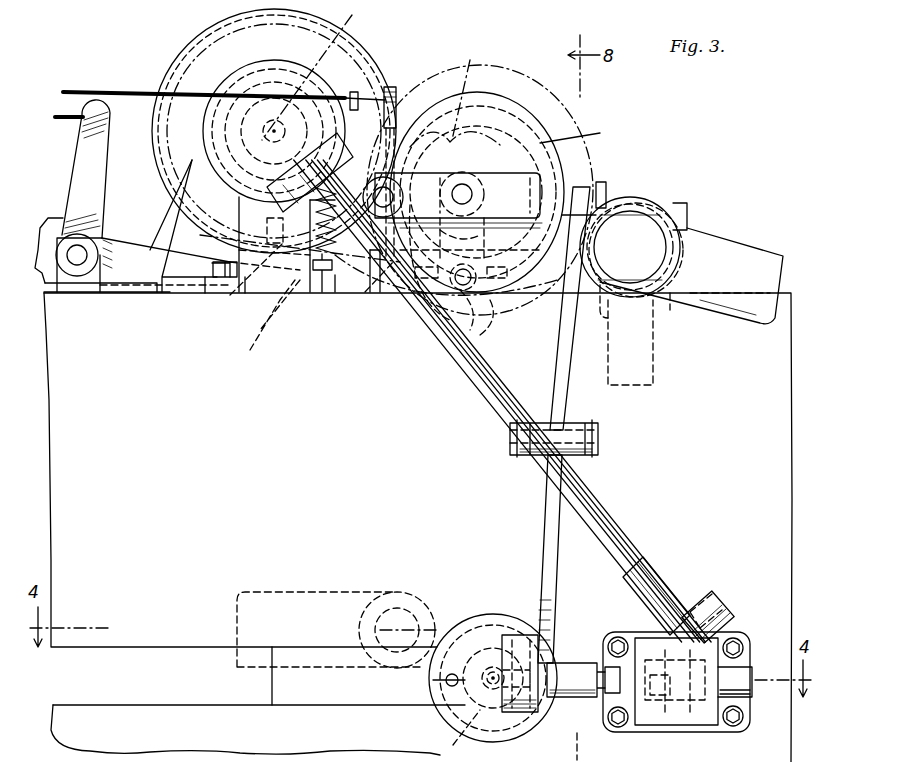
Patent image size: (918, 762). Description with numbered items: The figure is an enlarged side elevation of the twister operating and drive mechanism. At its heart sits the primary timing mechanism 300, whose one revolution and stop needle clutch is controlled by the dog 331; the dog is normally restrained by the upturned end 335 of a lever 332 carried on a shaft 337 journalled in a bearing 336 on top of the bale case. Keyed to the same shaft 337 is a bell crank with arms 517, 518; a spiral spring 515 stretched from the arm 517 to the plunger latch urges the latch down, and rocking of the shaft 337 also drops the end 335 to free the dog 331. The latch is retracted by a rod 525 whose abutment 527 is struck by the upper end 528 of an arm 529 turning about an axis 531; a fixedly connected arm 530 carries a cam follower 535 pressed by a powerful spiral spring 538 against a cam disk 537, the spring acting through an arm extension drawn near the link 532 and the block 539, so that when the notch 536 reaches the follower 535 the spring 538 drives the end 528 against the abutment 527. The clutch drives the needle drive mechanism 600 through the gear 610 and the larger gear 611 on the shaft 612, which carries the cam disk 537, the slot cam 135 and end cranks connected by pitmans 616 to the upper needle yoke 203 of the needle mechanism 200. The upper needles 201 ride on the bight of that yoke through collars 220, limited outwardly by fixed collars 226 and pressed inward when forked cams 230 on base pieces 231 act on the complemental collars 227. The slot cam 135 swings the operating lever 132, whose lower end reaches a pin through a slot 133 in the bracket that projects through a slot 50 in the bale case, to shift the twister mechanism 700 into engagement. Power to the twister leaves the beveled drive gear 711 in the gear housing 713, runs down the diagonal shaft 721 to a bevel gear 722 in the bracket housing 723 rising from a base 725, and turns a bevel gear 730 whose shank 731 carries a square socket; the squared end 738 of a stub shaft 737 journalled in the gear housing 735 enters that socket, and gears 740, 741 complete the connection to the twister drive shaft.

The slot 50 is at (155, 647).
The operating lever 132 is at (556, 374).
The slot 133 is at (588, 185).
The slot cam 135 is at (585, 130).
The needle mechanism 200 is at (691, 267).
The upper needles 201 is at (655, 348).
The upper needle yoke 203 is at (730, 268).
The collars 220 is at (672, 200).
The collars 226 is at (650, 205).
The complemental collars 227 is at (640, 212).
The forked cams 230 is at (690, 205).
The base pieces 231 is at (674, 310).
The primary timing mechanism 300 is at (220, 149).
The dog 331 is at (245, 290).
The lever 332 is at (152, 248).
The upturned end 335 is at (272, 310).
The bearing 336 is at (124, 285).
The shaft 337 is at (78, 264).
The spiral spring 515 is at (64, 121).
The bell crank arm 517 is at (98, 159).
The bell crank arm 518 is at (50, 225).
The rod 525 is at (122, 92).
The abutment 527 is at (353, 92).
The upper end 528 is at (392, 87).
The arm 529 is at (400, 157).
The arm 530 is at (430, 322).
The pivot axis 531 is at (375, 290).
The link 532 is at (369, 299).
The cam follower 535 is at (480, 325).
The notch 536 is at (478, 173).
The cam disk 537 is at (560, 152).
The spiral spring 538 is at (320, 270).
The slide block 539 is at (320, 169).
The needle drive mechanism 600 is at (477, 177).
The gear 610 is at (345, 32).
The gear 611 is at (490, 66).
The shaft 612 is at (466, 190).
The pitmans 616 is at (458, 231).
The twister mechanism 700 is at (395, 478).
The beveled drive gear 711 is at (210, 157).
The gear housing 713 is at (255, 131).
The shaft 721 is at (452, 352).
The bevel gear 722 is at (723, 606).
The bracket housing 723 is at (705, 598).
The base 725 is at (735, 730).
The bevel gear 730 is at (680, 722).
The shank 731 is at (640, 700).
The gear housing 735 is at (442, 717).
The stub shaft 737 is at (585, 663).
The squared end 738 is at (610, 660).
The gear 740 is at (520, 714).
The gear 741 is at (461, 736).